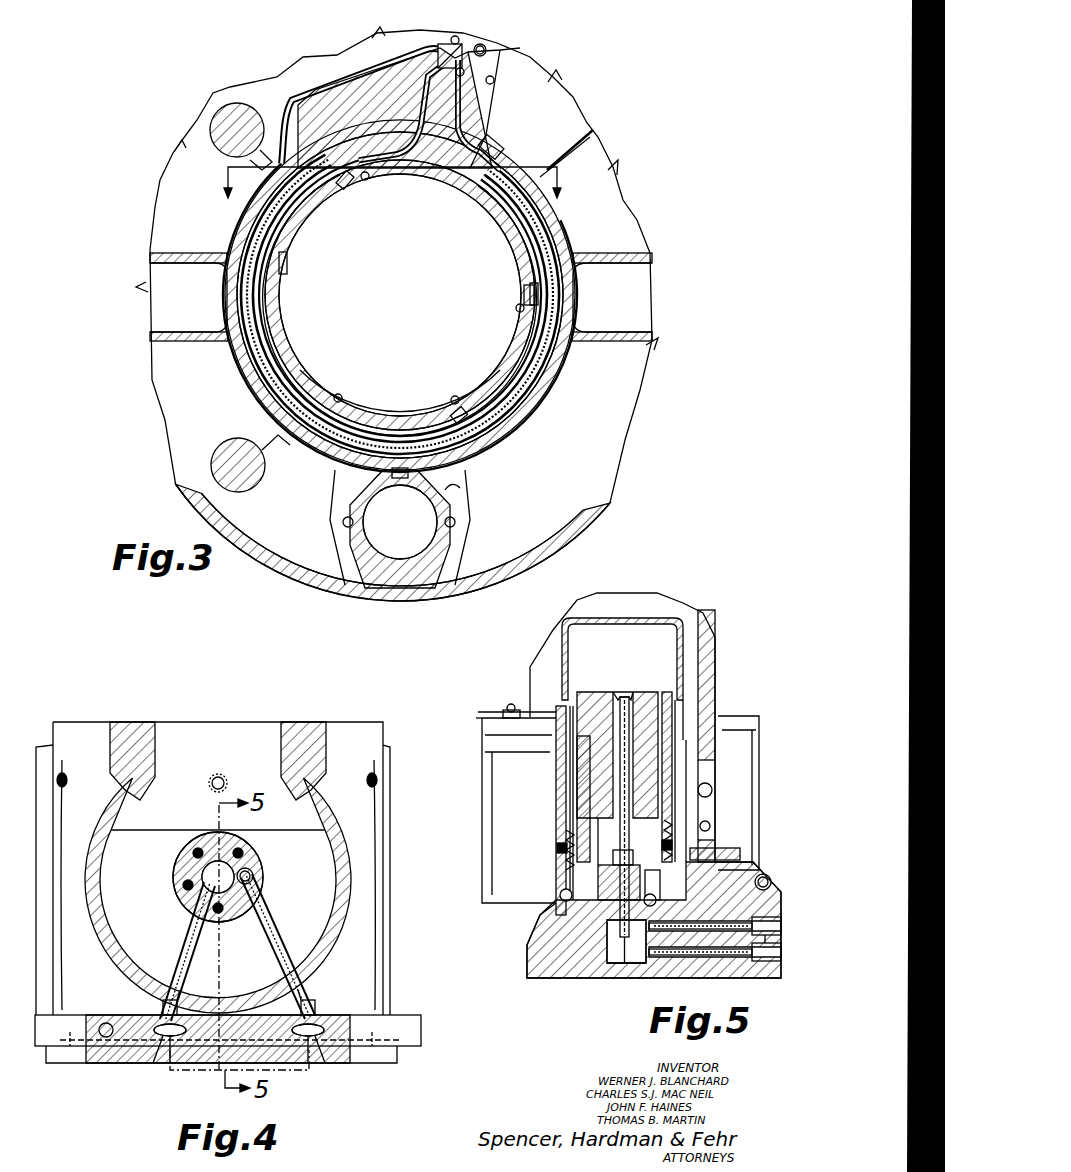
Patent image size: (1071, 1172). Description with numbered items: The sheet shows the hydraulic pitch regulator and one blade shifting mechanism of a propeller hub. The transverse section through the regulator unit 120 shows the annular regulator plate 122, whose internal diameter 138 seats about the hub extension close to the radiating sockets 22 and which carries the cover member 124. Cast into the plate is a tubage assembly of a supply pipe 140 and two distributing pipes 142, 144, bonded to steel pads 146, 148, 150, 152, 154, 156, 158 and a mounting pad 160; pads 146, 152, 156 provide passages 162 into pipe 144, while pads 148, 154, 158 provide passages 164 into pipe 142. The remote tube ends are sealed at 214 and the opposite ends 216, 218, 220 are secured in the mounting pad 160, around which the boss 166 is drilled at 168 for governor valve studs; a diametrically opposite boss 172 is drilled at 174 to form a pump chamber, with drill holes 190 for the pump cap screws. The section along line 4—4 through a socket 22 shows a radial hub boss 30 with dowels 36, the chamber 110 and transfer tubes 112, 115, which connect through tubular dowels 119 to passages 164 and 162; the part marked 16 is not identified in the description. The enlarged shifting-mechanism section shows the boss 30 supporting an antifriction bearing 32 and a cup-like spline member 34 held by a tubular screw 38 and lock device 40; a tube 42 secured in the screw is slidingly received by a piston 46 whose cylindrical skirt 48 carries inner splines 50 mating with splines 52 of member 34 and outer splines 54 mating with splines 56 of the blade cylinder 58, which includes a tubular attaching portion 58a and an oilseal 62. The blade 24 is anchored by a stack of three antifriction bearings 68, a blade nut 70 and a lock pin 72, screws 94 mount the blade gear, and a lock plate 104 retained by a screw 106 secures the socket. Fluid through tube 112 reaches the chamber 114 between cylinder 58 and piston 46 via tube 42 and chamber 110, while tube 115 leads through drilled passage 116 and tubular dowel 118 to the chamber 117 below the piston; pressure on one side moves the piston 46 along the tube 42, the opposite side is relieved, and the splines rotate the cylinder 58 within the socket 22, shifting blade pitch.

In FIG. 3, the section line 4 is at (391, 193).
In FIG. 4, the cylinder block 16 is at (384, 780).
In FIG. 4, the socket 22 is at (348, 892).
In FIG. 5, the socket 22 is at (492, 845).
In FIG. 5, the blade 24 is at (705, 624).
In FIG. 4, the boss 30 is at (178, 900).
In FIG. 5, the boss 30 is at (600, 905).
In FIG. 5, the antifriction bearing 32 is at (558, 896).
In FIG. 5, the cup-like spline member 34 is at (580, 836).
In FIG. 4, the dowels 36 is at (197, 847).
In FIG. 5, the tubular screw 38 is at (650, 872).
In FIG. 5, the lock device 40 is at (636, 862).
In FIG. 5, the tube 42 is at (624, 697).
In FIG. 5, the piston member 46 is at (648, 700).
In FIG. 5, the cylindrical skirt 48 is at (676, 745).
In FIG. 5, the splines 50 is at (577, 824).
In FIG. 5, the complementary splines 52 is at (565, 774).
In FIG. 5, the splines 54 is at (712, 800).
In FIG. 5, the splines 56 is at (688, 768).
In FIG. 5, the blade cylinder 58 is at (683, 660).
In FIG. 5, the tubular attaching portion 58a is at (571, 790).
In FIG. 5, the oilseal 62 is at (557, 862).
In FIG. 5, the anti-friction bearings 68 is at (712, 786).
In FIG. 5, the blade nut 70 is at (712, 845).
In FIG. 5, the lock pin 72 is at (742, 860).
In FIG. 5, the screws 94 is at (769, 881).
In FIG. 5, the lock plate 104 is at (500, 710).
In FIG. 5, the screw 106 is at (508, 706).
In FIG. 4, the chamber 110 is at (202, 870).
In FIG. 5, the chamber 110 is at (620, 966).
In FIG. 4, the transfer tube 112 is at (182, 936).
In FIG. 5, the transfer tube 112 is at (690, 958).
In FIG. 5, the chamber 114 is at (650, 640).
In FIG. 4, the tube 115 is at (278, 945).
In FIG. 5, the tube 115 is at (715, 958).
In FIG. 4, the drilled passage 116 is at (251, 876).
In FIG. 5, the drilled passage 116 is at (628, 966).
In FIG. 5, the chamber 117 is at (590, 860).
In FIG. 4, the tubular dowel 118 is at (250, 870).
In FIG. 5, the tubular dowel 118 is at (652, 934).
In FIG. 4, the tubular dowels 119 is at (182, 1015).
In FIG. 5, the tubular dowels 119 is at (766, 938).
In FIG. 4, the hydraulic regulator unit 120 is at (416, 1012).
In FIG. 3, the plate member 122 is at (628, 214).
In FIG. 4, the plate member 122 is at (345, 1058).
In FIG. 5, the plate member 122 is at (770, 980).
In FIG. 3, the cover member 124 is at (306, 598).
In FIG. 3, the internal diameter 138 is at (302, 222).
In FIG. 3, the supply pipe 140 is at (228, 240).
In FIG. 4, the supply pipe 140 is at (106, 1022).
In FIG. 5, the supply pipe 140 is at (770, 888).
In FIG. 3, the distributing pipe 142 is at (283, 322).
In FIG. 4, the distributing pipe 142 is at (160, 1040).
In FIG. 5, the distributing pipe 142 is at (781, 952).
In FIG. 3, the distributing pipe 144 is at (286, 376).
In FIG. 4, the distributing pipe 144 is at (320, 1050).
In FIG. 5, the distributing pipe 144 is at (781, 925).
In FIG. 3, the steel pad 146 is at (283, 292).
In FIG. 3, the steel pad 148 is at (302, 400).
In FIG. 3, the steel pad 150 is at (366, 432).
In FIG. 3, the steel pad 152 is at (458, 420).
In FIG. 3, the steel pad 154 is at (524, 300).
In FIG. 3, the steel pad 156 is at (470, 182).
In FIG. 4, the steel pad 156 is at (326, 1028).
In FIG. 3, the steel pad 158 is at (343, 186).
In FIG. 4, the steel pad 158 is at (158, 1026).
In FIG. 3, the mounting pad 160 is at (484, 46).
In FIG. 3, the passage 162 is at (492, 154).
In FIG. 4, the passage 162 is at (305, 1040).
In FIG. 3, the passage 164 is at (367, 180).
In FIG. 4, the passage 164 is at (190, 1068).
In FIG. 3, the boss 166 is at (492, 72).
In FIG. 3, the drilled holes 168 is at (457, 36).
In FIG. 3, the boss 172 is at (352, 497).
In FIG. 3, the chamber 174 is at (440, 502).
In FIG. 3, the drill holes 190 is at (343, 522).
In FIG. 3, the sealed extremities 214 is at (286, 258).
In FIG. 3, the tube end 216 is at (437, 46).
In FIG. 3, the tube end 218 is at (447, 106).
In FIG. 3, the tube end 220 is at (462, 88).